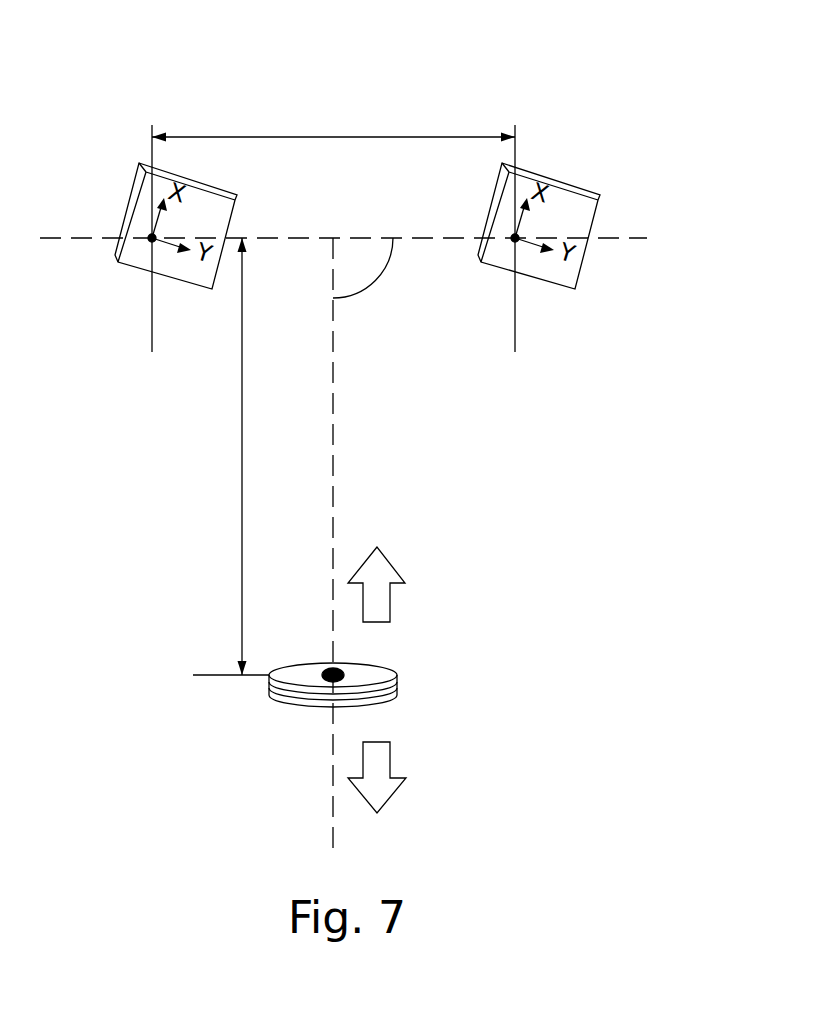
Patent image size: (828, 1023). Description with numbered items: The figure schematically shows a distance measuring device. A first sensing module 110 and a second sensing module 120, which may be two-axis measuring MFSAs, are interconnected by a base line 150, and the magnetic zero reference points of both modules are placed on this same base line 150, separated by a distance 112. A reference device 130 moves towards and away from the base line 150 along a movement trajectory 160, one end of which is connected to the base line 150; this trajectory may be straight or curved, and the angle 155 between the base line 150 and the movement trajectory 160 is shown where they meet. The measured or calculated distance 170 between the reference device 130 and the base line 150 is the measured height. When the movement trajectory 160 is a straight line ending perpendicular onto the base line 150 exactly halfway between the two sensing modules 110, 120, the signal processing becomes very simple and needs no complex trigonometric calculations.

The first sensing module 110 is at (148, 162).
The second sensing module 120 is at (573, 183).
The distance between first and second sensing module 112 is at (382, 137).
The reference device 130 is at (398, 688).
The base line 150 is at (447, 238).
The angle between base line and movement trajectory 155 is at (380, 280).
The movement trajectory 160 is at (333, 403).
The measured distance 170 is at (242, 441).